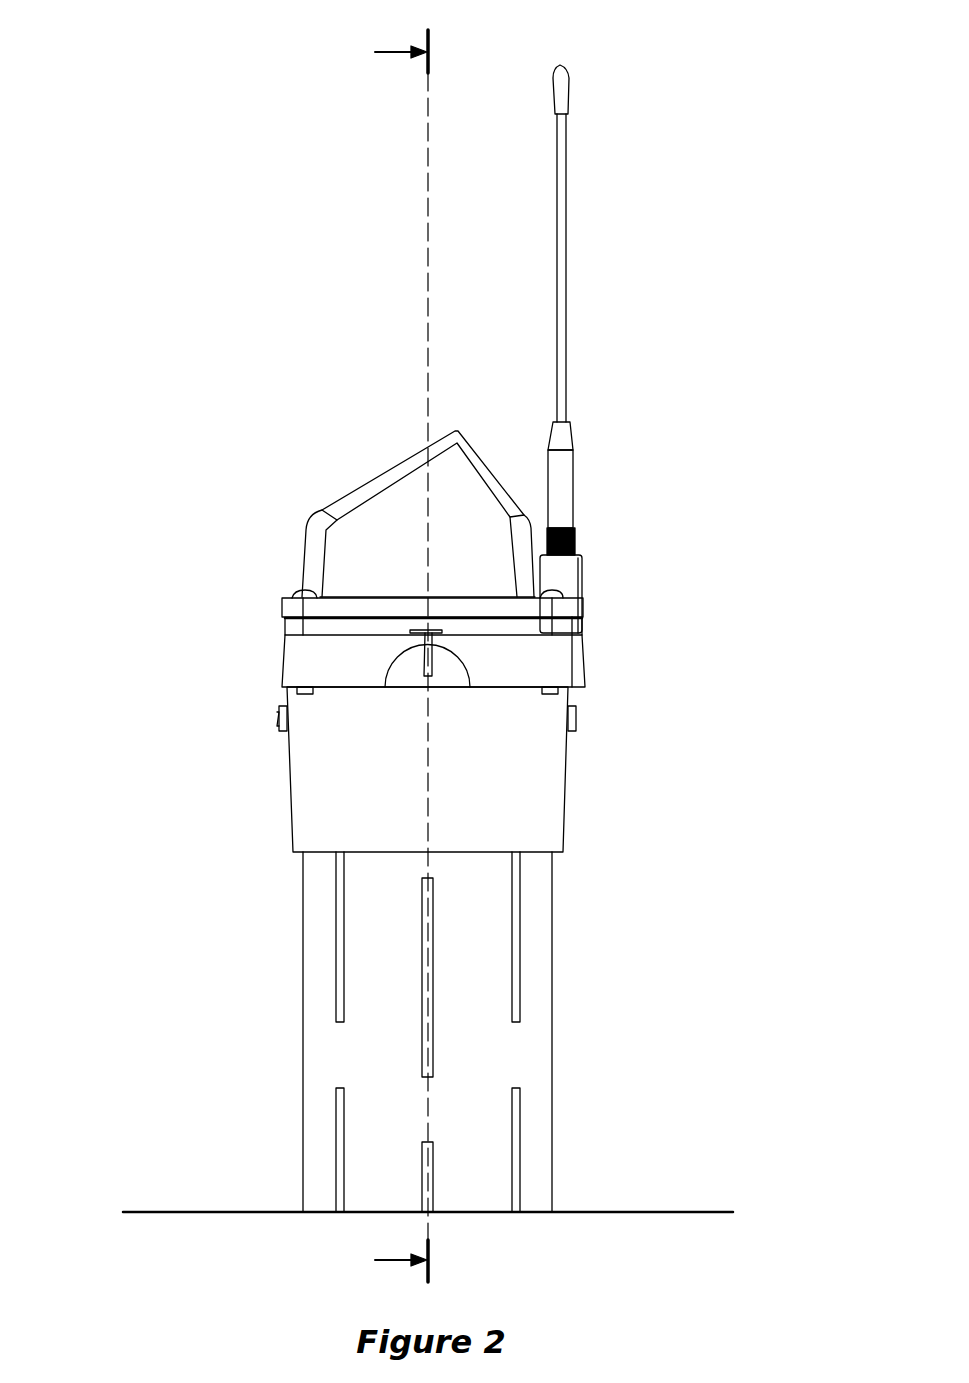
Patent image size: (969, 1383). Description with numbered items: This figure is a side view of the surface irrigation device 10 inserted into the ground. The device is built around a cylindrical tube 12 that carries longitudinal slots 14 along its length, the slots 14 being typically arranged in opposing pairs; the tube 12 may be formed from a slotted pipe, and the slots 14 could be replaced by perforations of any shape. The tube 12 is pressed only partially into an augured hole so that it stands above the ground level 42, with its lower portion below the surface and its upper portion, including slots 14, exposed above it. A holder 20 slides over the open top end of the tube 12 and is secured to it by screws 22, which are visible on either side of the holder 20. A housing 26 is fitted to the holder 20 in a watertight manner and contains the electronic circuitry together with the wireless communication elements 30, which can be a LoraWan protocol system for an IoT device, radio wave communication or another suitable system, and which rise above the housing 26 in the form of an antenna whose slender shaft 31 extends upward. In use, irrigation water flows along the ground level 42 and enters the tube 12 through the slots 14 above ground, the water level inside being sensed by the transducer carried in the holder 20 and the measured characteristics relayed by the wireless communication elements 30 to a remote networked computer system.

The surface irrigation device 10 is at (121, 64).
The cylindrical tube 12 is at (552, 1088).
The longitudinal slots 14 is at (520, 1003).
The holder 20 is at (548, 788).
The screws 22 is at (277, 718).
The housing 26 is at (313, 557).
The wireless communication elements 30 is at (584, 269).
The antenna shaft 31 is at (560, 354).
The ground level 42 is at (657, 1212).